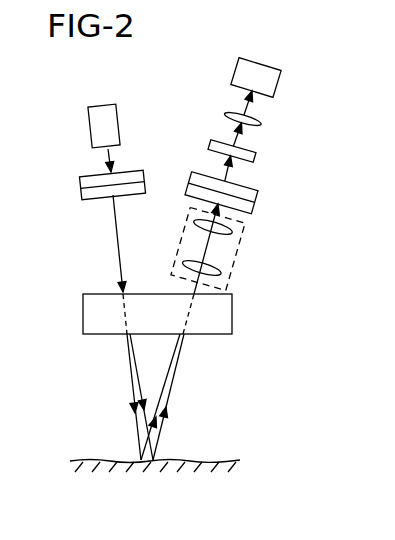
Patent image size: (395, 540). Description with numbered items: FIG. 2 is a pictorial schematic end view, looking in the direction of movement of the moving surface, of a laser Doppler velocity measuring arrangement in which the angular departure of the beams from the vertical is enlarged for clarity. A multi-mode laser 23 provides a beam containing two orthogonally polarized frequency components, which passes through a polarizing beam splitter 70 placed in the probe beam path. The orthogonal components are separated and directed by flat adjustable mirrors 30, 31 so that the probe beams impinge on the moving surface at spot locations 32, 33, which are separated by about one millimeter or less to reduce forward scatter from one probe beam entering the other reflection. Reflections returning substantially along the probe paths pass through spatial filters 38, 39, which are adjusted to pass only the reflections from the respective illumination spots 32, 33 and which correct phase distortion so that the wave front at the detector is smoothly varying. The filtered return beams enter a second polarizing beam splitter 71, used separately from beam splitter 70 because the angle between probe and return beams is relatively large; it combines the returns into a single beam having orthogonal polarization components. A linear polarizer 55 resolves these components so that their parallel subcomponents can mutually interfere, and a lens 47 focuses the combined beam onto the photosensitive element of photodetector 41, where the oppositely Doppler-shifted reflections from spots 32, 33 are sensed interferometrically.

The multi-mode laser 23 is at (123, 138).
The polarizing beam splitter 70 is at (84, 198).
The adjustable mirror 30 is at (196, 314).
The adjustable mirror 31 is at (232, 322).
The spot location 33 is at (139, 456).
The spot location 32 is at (158, 456).
The spatial filter 38 is at (240, 249).
The spatial filter 39 is at (236, 248).
The polarizing beam splitter 71 is at (253, 207).
The linear polarizer 55 is at (256, 157).
The lens 47 is at (262, 121).
The photodetector 41 is at (278, 84).